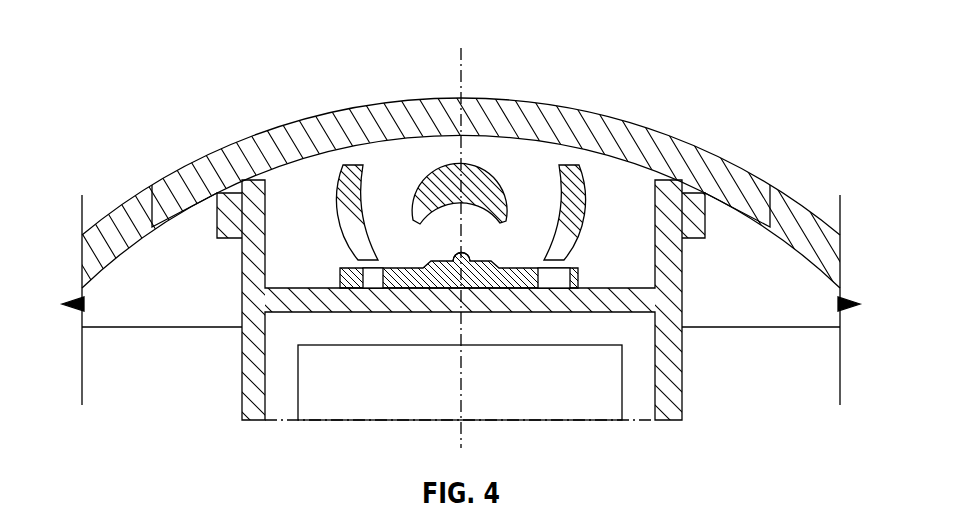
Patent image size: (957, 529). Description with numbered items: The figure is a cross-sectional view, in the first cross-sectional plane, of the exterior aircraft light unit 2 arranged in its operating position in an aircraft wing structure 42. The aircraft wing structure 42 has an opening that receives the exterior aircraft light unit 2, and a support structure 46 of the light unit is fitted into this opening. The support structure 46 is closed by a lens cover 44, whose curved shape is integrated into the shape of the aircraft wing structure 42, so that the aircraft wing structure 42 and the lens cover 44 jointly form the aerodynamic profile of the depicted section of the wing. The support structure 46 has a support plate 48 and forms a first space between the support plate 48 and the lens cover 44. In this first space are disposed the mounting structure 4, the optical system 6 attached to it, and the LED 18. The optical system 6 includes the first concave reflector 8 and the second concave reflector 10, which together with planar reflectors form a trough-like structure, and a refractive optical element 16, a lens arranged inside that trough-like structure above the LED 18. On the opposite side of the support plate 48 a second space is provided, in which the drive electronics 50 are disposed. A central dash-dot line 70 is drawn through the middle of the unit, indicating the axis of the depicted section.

The exterior aircraft light unit 2 is at (718, 124).
The mounting structure 4 is at (578, 280).
The optical system 6 is at (486, 203).
The first concave reflector 8 is at (364, 186).
The second concave reflector 10 is at (559, 170).
The refractive optical element 16 is at (477, 167).
The LED 18 is at (463, 251).
The aircraft wing structure 42 is at (818, 228).
The lens cover 44 is at (509, 101).
The support structure 46 is at (683, 308).
The support plate 48 is at (303, 313).
The drive electronics 50 is at (571, 422).
The central axis 70 is at (462, 72).